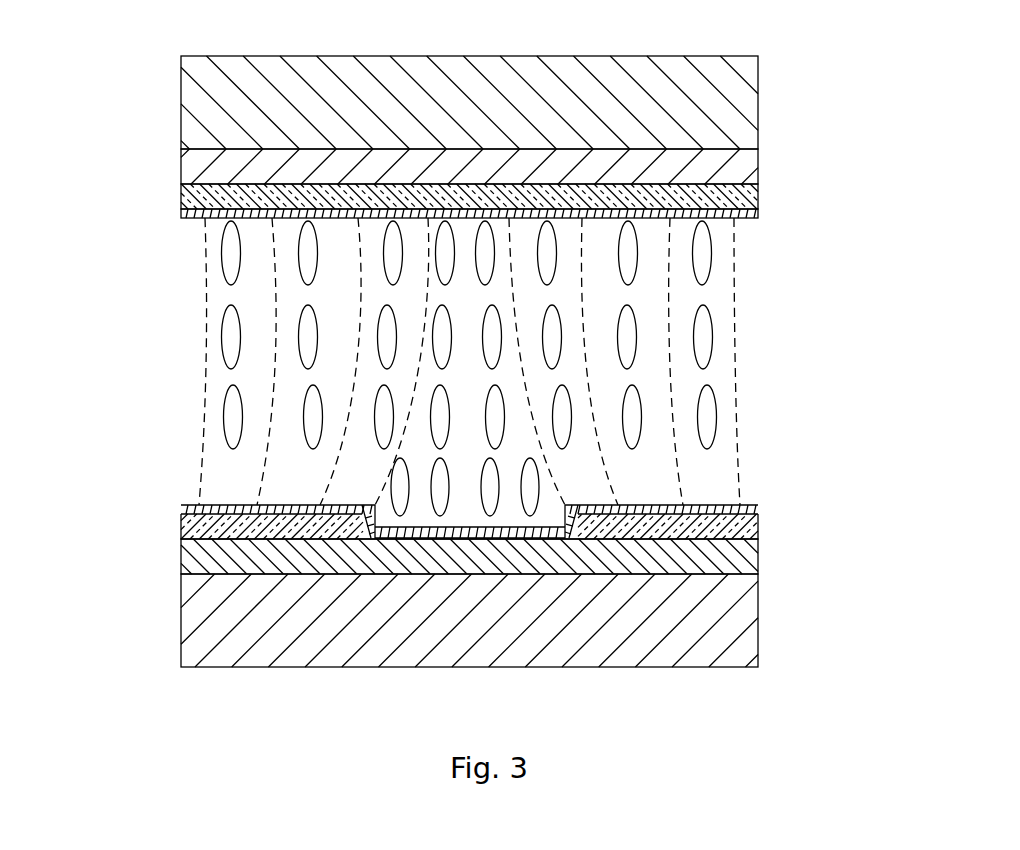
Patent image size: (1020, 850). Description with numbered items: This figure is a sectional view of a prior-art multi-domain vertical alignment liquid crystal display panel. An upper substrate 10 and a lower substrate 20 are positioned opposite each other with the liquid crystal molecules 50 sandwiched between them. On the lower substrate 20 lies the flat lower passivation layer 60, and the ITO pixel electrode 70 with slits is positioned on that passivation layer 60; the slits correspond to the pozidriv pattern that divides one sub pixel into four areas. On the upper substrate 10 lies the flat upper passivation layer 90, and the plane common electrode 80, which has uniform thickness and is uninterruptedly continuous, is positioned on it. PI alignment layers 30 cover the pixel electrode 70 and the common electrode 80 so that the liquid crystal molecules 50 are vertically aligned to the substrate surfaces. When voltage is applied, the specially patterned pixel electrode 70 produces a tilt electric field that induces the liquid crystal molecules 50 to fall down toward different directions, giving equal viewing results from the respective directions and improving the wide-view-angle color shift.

The upper substrate 10 is at (181, 127).
The lower substrate 20 is at (181, 628).
The PI alignment layers 30 is at (180, 505).
The liquid crystal molecules 50 is at (698, 342).
The lower passivation layer 60 is at (718, 563).
The pixel electrode 70 is at (732, 528).
The common electrode 80 is at (690, 198).
The upper passivation layer 90 is at (682, 168).